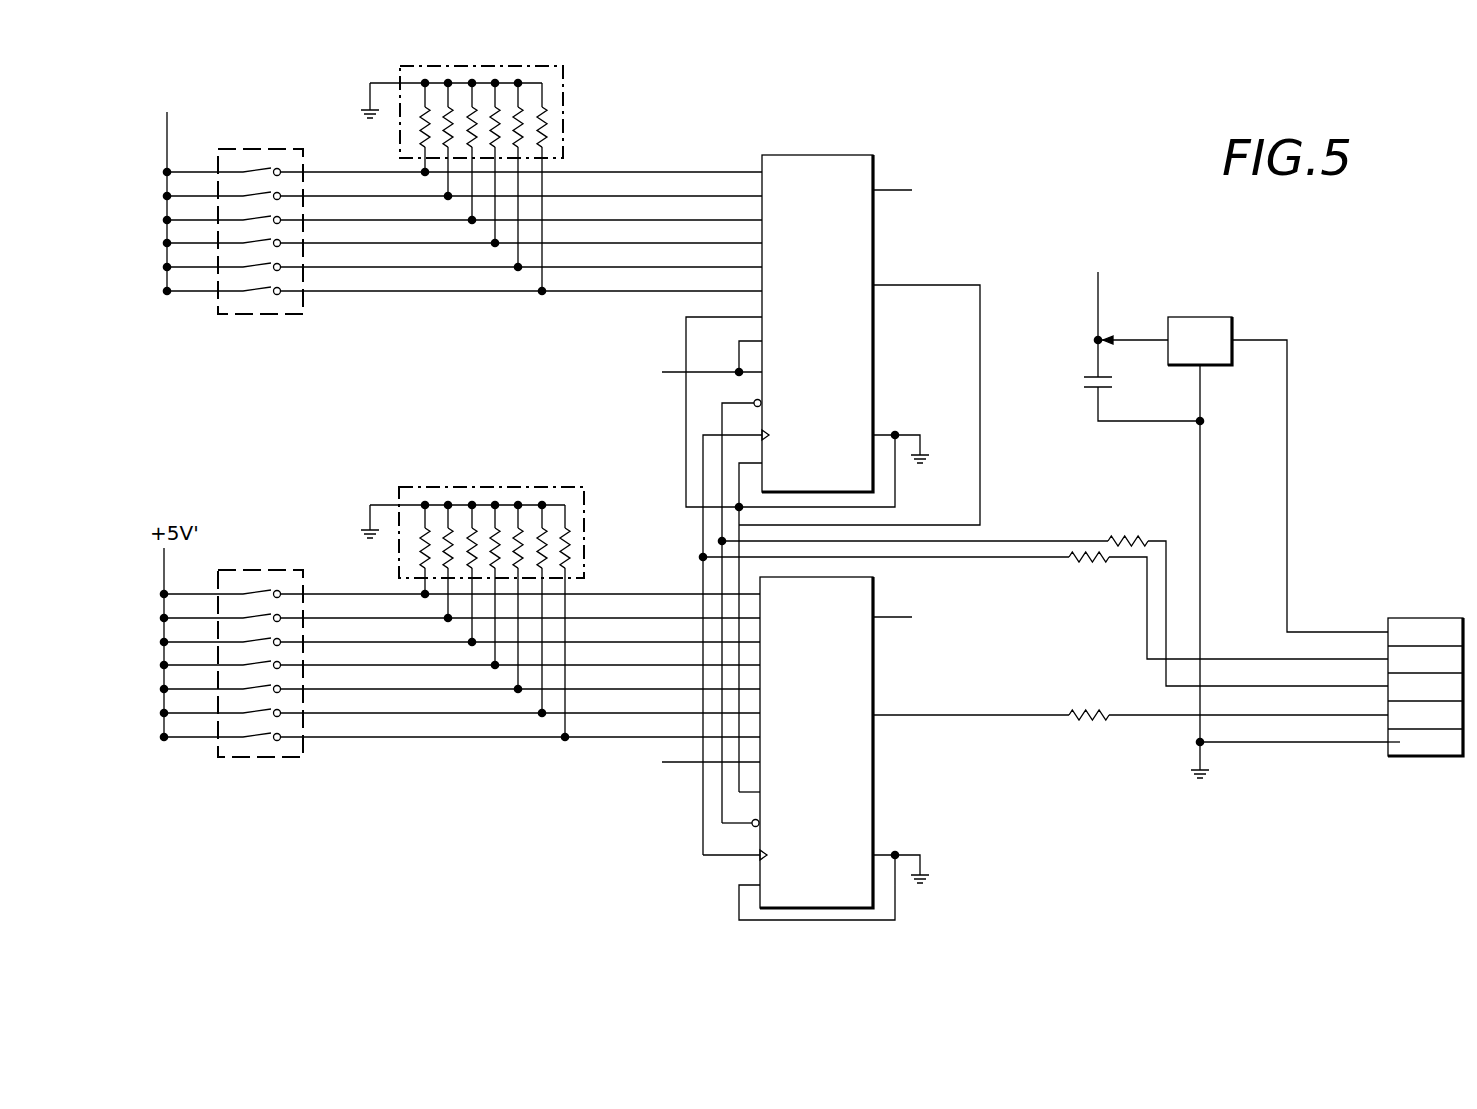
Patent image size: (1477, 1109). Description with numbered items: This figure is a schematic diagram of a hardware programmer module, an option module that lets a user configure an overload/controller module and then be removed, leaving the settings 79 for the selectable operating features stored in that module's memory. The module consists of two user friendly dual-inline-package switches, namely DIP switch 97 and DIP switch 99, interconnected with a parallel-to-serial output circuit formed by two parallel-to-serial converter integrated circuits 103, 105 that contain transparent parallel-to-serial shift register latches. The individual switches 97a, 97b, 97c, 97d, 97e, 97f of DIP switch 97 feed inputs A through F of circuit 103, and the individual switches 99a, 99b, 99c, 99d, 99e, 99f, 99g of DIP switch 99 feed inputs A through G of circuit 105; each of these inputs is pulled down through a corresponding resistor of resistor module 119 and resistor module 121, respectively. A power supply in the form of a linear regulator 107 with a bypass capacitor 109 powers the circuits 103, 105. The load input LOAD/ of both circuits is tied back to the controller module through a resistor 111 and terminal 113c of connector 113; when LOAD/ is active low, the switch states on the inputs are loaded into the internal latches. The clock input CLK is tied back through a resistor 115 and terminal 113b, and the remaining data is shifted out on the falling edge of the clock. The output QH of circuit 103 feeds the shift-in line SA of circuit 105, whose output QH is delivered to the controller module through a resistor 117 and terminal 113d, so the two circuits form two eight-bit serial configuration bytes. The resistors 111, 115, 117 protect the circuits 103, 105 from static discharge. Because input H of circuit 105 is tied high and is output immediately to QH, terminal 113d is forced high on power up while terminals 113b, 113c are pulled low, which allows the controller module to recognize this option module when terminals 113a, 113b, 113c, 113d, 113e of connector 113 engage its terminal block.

The settings 79 is at (246, 115).
The DIP switch 97 is at (304, 313).
The switch of DIP switch 97a is at (243, 169).
The switch of DIP switch 97b is at (250, 194).
The switch of DIP switch 97c is at (256, 218).
The switch of DIP switch 97d is at (234, 246).
The switch of DIP switch 97e is at (247, 269).
The switch of DIP switch 97f is at (258, 294).
The DIP switch 99 is at (304, 753).
The switch of DIP switch 99a is at (242, 591).
The switch of DIP switch 99b is at (250, 616).
The switch of DIP switch 99c is at (256, 640).
The switch of DIP switch 99d is at (229, 667).
The switch of DIP switch 99e is at (241, 691).
The switch of DIP switch 99f is at (253, 716).
The switch of DIP switch 99g is at (263, 740).
The parallel-to-serial converter integrated circuit 103 is at (875, 366).
The parallel-to-serial converter integrated circuit 105 is at (875, 786).
The linear regulator 107 is at (1212, 317).
The bypass capacitor 109 is at (1085, 383).
The resistor 111 is at (1131, 540).
The connector 113 is at (1425, 758).
The terminal of connector 113a is at (1388, 632).
The terminal of connector 113b is at (1388, 659).
The terminal of connector 113c is at (1388, 686).
The terminal of connector 113d is at (1388, 715).
The terminal of connector 113e is at (1388, 742).
The resistor 115 is at (1086, 563).
The resistor 117 is at (1086, 722).
The resistor module 119 is at (564, 81).
The resistor module 121 is at (476, 487).